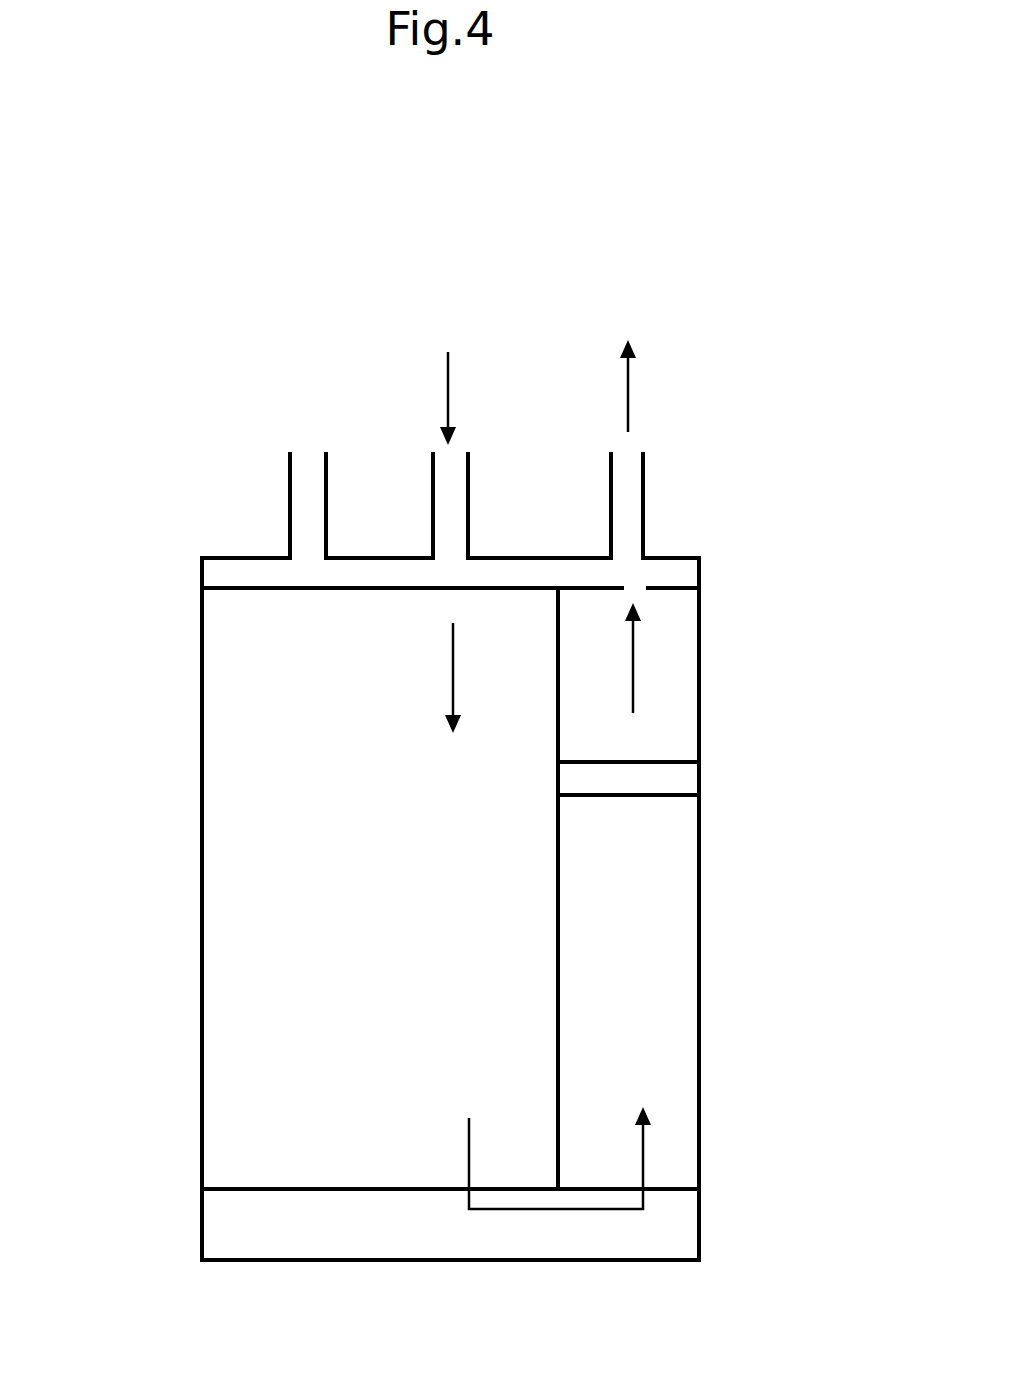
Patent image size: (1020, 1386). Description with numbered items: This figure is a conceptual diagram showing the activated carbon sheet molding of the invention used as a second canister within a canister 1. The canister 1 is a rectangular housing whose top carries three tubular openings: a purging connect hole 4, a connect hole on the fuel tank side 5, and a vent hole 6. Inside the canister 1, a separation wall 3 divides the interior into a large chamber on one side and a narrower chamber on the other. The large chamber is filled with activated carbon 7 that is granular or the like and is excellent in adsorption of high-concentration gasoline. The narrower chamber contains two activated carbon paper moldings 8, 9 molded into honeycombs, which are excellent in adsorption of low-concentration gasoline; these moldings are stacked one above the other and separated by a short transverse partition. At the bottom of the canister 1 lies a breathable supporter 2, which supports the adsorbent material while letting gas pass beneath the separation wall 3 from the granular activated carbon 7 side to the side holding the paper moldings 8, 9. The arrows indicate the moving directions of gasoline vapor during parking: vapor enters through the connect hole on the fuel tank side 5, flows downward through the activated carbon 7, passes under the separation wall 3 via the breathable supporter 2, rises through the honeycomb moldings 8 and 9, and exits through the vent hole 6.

The canister 1 is at (713, 673).
The breathable supporter 2 is at (437, 1192).
The separation wall 3 is at (557, 1020).
The purging connect hole 4 is at (303, 517).
The connect hole on the fuel tank side 5 is at (447, 510).
The vent hole 6 is at (623, 500).
The activated carbon 7 is at (250, 923).
The activated carbon paper molding 8 is at (628, 903).
The activated carbon paper molding 9 is at (657, 632).